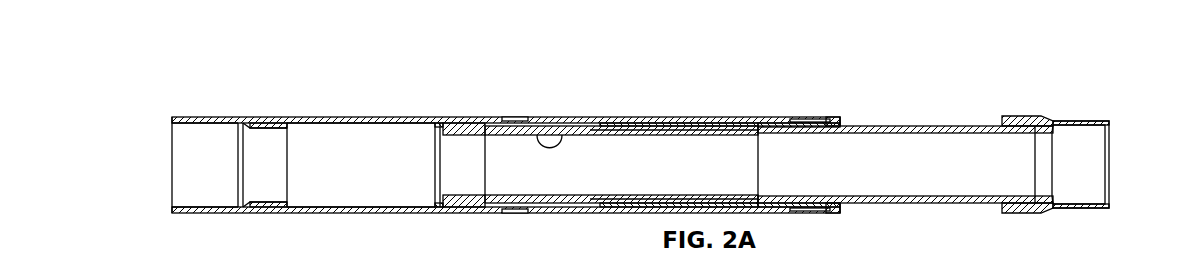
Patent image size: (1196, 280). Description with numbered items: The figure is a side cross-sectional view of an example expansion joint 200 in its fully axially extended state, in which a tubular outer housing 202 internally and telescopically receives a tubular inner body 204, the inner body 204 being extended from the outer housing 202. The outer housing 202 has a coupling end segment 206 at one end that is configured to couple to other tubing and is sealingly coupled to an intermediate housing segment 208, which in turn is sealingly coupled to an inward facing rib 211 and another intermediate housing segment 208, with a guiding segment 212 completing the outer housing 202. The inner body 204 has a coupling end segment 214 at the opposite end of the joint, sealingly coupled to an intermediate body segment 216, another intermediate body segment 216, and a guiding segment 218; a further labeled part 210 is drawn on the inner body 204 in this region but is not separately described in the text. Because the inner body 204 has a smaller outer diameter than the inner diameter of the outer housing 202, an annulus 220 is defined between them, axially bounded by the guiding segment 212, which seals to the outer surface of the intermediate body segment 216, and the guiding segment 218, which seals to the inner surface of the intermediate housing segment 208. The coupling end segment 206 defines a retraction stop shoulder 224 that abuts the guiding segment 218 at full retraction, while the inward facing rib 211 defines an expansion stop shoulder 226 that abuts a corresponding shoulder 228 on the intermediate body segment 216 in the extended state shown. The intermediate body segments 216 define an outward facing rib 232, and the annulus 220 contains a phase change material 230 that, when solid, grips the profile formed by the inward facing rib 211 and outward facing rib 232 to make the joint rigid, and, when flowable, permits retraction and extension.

The expansion joint 200 is at (224, 46).
The tubular outer housing 202 is at (367, 110).
The tubular inner body 204 is at (900, 122).
The coupling end segment 206 is at (197, 116).
The intermediate housing segment 208 is at (315, 116).
The inner mandrel 210 is at (530, 116).
The inward facing rib 211 is at (563, 133).
The guiding segment 212 is at (829, 118).
The coupling end segment 214 is at (1020, 116).
The intermediate body segment 216 is at (617, 128).
The guiding segment 218 is at (445, 122).
The annulus 220 is at (640, 118).
The retraction stop shoulder 224 is at (285, 118).
The expansion stop shoulder 226 is at (499, 120).
The shoulder 228 is at (494, 125).
The phase change material 230 is at (708, 125).
The outward facing rib 232 is at (765, 126).